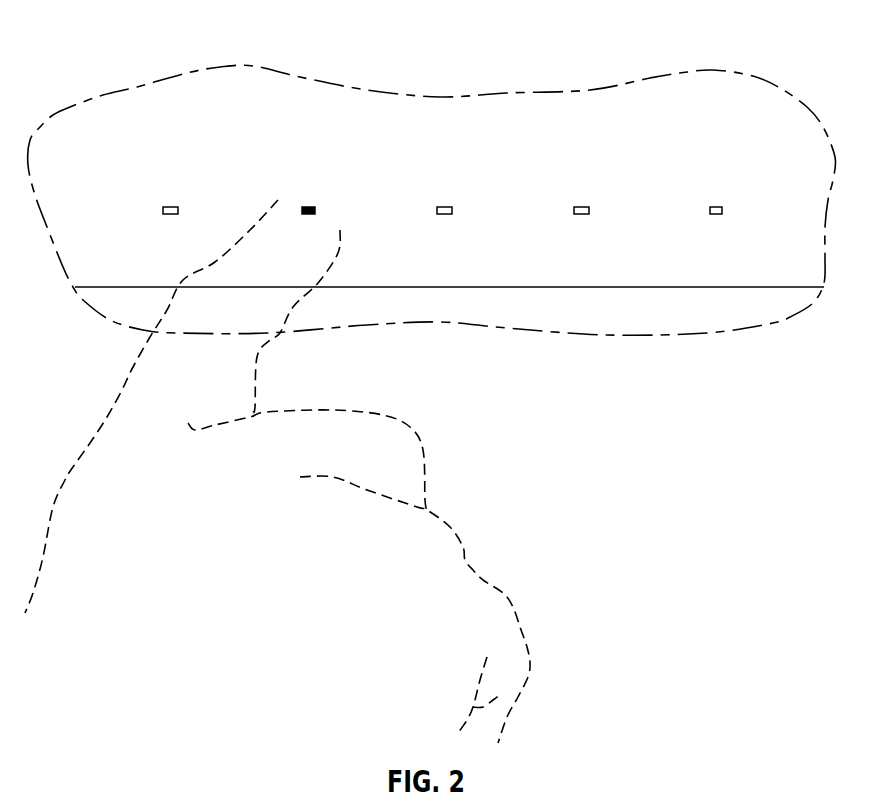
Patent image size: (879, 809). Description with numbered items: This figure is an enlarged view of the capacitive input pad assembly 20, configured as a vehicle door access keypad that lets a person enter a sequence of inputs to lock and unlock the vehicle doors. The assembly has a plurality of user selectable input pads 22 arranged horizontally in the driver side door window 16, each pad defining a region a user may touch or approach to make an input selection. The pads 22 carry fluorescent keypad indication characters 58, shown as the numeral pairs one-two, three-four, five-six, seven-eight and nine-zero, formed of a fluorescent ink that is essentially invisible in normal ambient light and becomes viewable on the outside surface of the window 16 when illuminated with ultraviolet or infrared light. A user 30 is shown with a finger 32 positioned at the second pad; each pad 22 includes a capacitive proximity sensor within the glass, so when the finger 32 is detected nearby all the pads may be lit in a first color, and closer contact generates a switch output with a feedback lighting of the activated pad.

The capacitive input pad assembly 20 is at (590, 77).
The driver side door window 16 is at (732, 118).
The user selectable input pads 22 is at (282, 175).
The keypad indication characters 58 is at (194, 186).
The user 30 is at (122, 385).
The user's finger 32 is at (340, 240).